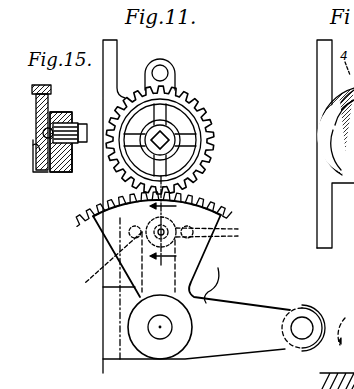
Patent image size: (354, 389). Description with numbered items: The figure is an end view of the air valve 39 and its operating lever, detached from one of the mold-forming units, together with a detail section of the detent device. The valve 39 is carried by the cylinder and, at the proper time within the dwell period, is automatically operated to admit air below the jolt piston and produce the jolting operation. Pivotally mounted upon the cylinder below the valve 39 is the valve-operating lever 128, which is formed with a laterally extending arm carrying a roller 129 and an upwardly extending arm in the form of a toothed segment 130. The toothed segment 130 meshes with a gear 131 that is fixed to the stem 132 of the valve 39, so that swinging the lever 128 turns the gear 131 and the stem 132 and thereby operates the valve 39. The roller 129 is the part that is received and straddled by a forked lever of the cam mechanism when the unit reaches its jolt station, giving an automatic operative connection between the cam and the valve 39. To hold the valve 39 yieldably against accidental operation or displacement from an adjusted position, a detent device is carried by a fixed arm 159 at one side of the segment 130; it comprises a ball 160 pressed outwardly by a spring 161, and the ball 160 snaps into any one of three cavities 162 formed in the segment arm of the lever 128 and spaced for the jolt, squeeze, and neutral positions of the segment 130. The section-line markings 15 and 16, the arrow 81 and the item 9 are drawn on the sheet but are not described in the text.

In FIG. 11, the valve 39 is at (180, 88).
In FIG. 11, the gear 131 is at (202, 116).
In FIG. 11, the stem 132 is at (169, 140).
In FIG. 11, the toothed segment 130 is at (88, 223).
In FIG. 15, the cavities 162 is at (53, 174).
In FIG. 11, the cavities 162 is at (161, 235).
In FIG. 15, the valve-operating lever 128 is at (34, 174).
In FIG. 11, the valve-operating lever 128 is at (197, 260).
In FIG. 11, the roller 129 is at (302, 306).
In FIG. 11, the shaft 81 is at (353, 322).
In FIG. 11, the base 9 is at (346, 352).
In FIG. 11, the section line 15 is at (169, 208).
In FIG. 11, the section line 16 is at (169, 258).
In FIG. 15, the ball 160 is at (59, 113).
In FIG. 15, the spring 161 is at (74, 123).
In FIG. 15, the fixed arm 159 is at (72, 160).